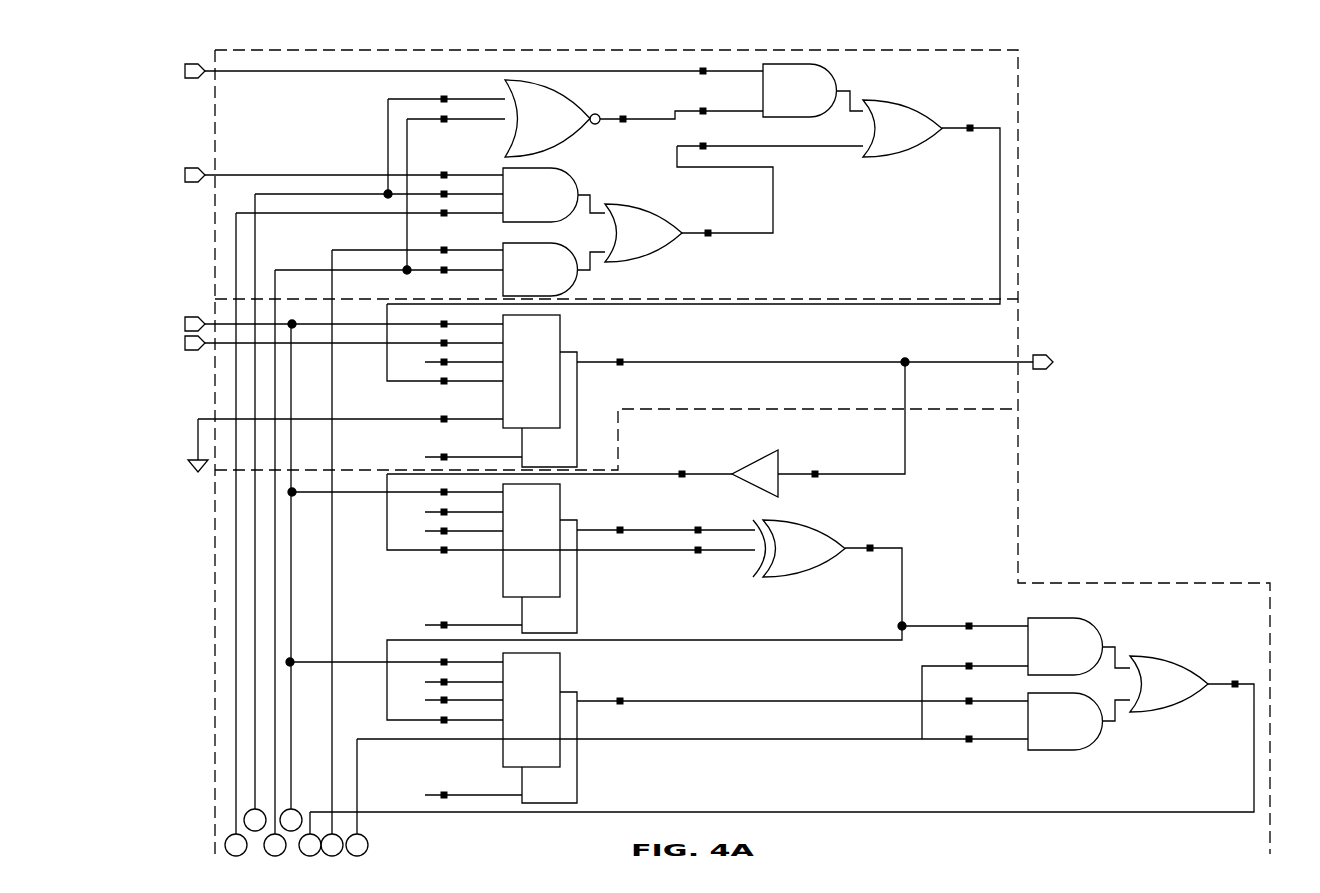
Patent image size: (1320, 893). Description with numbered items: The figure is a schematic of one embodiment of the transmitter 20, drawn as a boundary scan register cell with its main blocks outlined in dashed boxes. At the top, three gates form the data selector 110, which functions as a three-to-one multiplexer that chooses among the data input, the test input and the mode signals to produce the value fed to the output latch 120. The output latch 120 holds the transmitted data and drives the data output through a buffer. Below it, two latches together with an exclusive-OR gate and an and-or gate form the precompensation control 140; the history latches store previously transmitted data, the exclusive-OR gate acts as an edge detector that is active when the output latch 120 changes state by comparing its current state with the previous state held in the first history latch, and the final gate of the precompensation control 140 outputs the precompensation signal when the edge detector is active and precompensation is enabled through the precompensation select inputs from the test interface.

The transmitter 20 is at (1124, 150).
The data selector 110 is at (636, 178).
The output latch 120 is at (628, 400).
The precompensation control 140 is at (1138, 583).